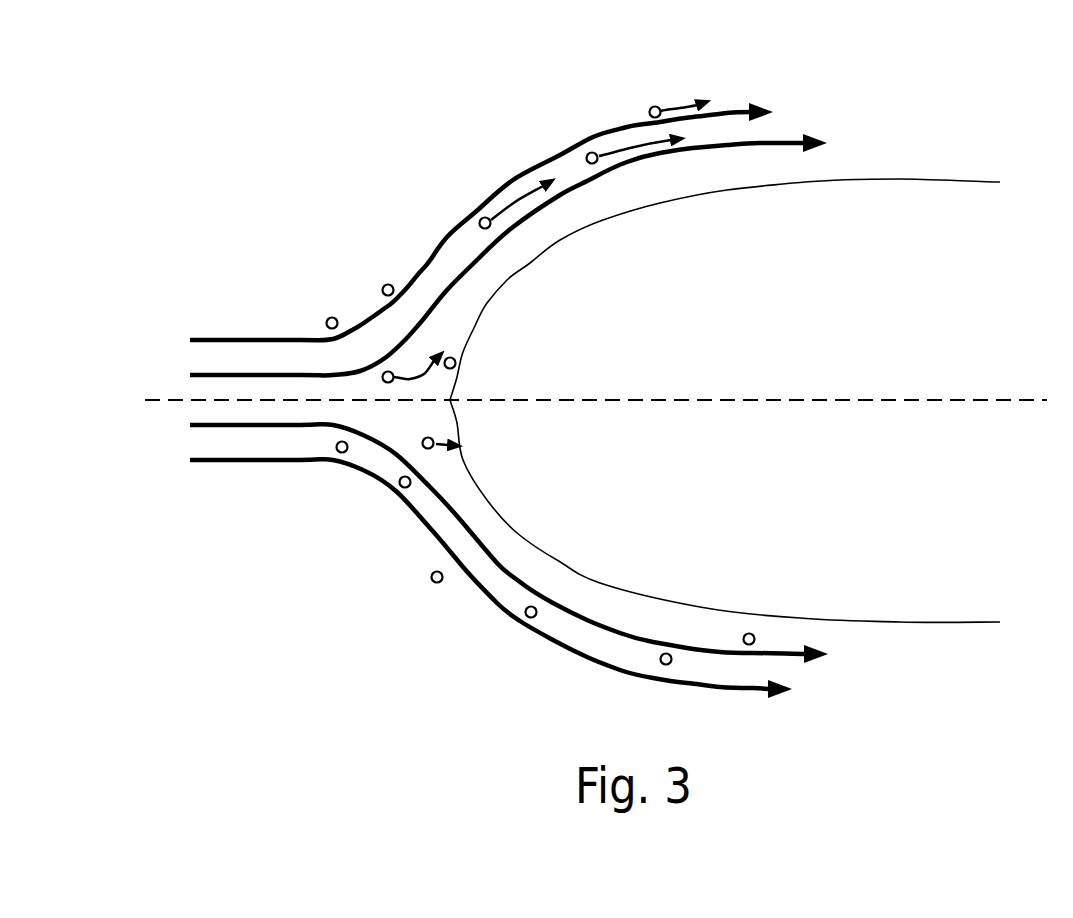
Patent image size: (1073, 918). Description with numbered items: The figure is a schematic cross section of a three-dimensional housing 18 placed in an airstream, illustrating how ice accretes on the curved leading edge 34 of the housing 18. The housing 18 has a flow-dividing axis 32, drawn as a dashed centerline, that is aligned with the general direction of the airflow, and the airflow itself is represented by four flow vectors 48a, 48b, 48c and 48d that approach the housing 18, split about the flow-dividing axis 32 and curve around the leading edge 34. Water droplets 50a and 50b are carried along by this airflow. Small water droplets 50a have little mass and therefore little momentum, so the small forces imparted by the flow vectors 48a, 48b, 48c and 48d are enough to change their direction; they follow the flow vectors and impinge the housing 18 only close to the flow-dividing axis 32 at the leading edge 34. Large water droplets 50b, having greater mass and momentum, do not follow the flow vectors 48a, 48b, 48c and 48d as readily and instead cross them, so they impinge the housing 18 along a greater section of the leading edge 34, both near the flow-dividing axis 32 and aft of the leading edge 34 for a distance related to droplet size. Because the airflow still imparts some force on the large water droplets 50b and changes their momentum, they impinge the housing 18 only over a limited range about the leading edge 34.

The housing 18 is at (677, 298).
The flow-dividing axis 32 is at (785, 371).
The leading edge 34 is at (450, 400).
The flow vector 48a is at (287, 337).
The flow vector 48b is at (473, 260).
The flow vector 48c is at (437, 506).
The flow vector 48d is at (575, 653).
The small water droplets 50a is at (650, 112).
The large water droplets 50b is at (432, 442).